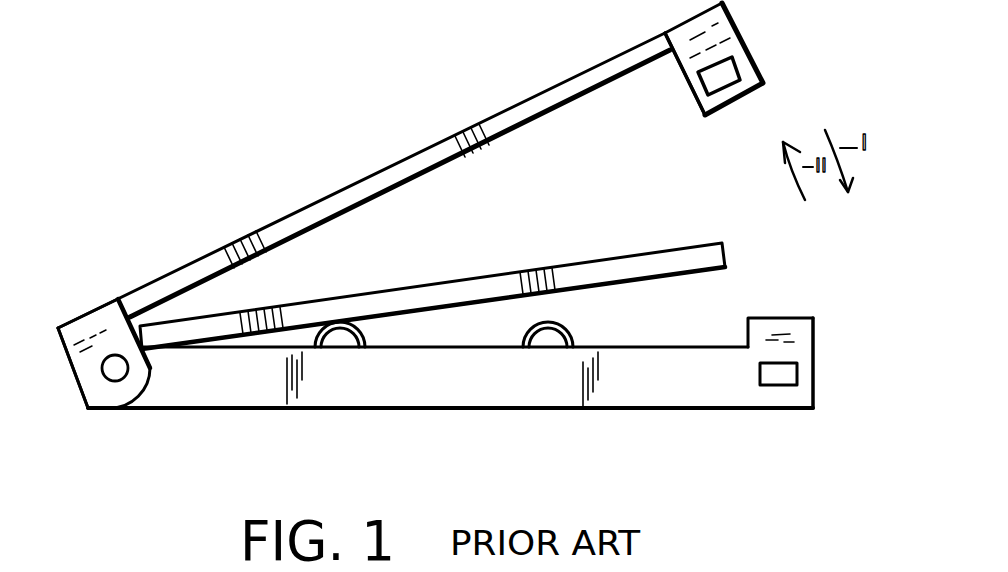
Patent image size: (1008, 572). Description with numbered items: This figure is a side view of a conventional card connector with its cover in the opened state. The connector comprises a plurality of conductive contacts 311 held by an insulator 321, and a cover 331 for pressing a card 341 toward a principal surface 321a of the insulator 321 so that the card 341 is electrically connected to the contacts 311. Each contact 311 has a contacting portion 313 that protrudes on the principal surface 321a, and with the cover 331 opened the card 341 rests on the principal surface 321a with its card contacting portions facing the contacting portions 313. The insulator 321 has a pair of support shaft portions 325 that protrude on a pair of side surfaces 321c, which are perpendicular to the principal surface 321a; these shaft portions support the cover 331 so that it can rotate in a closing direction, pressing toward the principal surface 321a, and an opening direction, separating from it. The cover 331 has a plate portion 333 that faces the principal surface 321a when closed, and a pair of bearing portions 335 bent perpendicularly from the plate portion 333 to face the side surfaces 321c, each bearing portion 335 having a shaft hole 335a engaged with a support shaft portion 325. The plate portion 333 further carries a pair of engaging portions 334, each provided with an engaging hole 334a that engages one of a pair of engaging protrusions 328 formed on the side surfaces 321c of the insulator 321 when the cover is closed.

The insulator 321 is at (813, 327).
The principal surface 321a is at (680, 347).
The side surface 321c is at (668, 383).
The engaging protrusion 328 is at (782, 377).
The support shaft portion 325 is at (112, 370).
The bearing portion 335 is at (115, 318).
The shaft hole 335a is at (100, 343).
The cover 331 is at (285, 215).
The plate portion 333 is at (437, 145).
The engaging portion 334 is at (750, 95).
The engaging hole 334a is at (703, 88).
The card 341 is at (652, 253).
The conductive contact 311 is at (302, 304).
The contacting portion 313 is at (350, 323).